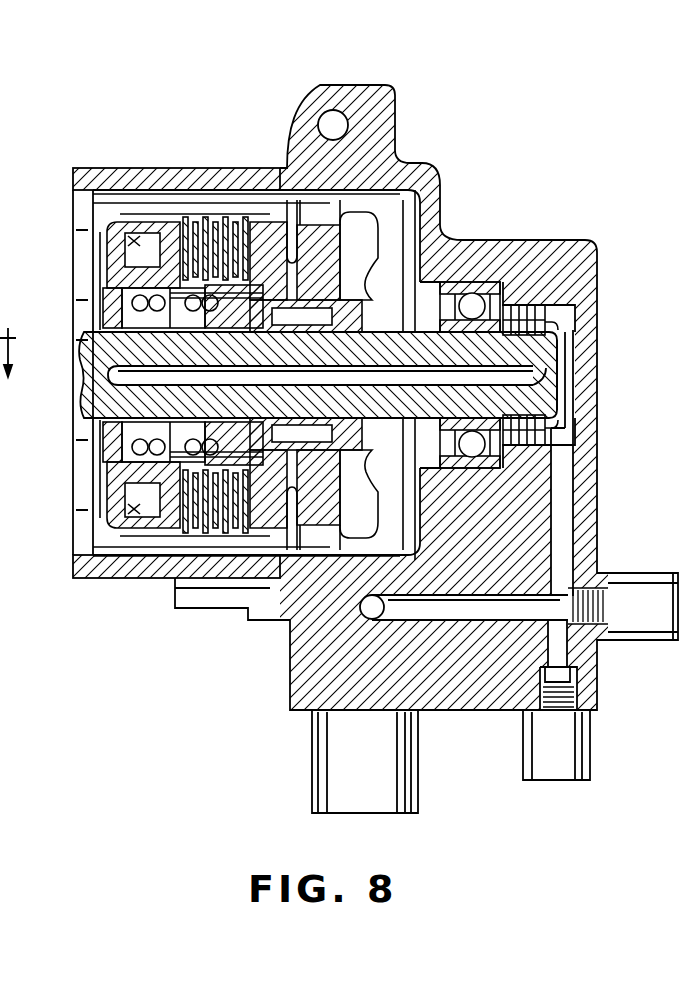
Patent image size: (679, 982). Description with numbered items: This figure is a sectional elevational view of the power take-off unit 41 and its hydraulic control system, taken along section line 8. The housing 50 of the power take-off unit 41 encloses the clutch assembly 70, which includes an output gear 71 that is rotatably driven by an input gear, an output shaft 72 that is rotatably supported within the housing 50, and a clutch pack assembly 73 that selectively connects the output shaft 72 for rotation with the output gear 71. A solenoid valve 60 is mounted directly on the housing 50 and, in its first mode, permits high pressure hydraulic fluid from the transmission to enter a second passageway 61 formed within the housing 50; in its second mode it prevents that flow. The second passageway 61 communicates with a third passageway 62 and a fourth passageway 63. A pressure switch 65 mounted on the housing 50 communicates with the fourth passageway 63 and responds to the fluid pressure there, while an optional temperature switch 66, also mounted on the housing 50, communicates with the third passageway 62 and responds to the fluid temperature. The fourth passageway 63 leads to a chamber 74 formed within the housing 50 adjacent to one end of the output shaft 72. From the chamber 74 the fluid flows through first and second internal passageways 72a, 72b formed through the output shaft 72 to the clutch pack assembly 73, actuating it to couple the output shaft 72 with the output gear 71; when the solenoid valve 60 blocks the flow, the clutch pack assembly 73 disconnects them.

The power take-off unit 41 is at (502, 168).
The housing 50 is at (571, 250).
The clutch pack assembly 73 is at (196, 204).
The output gear 71 is at (310, 237).
The clutch assembly 70 is at (362, 277).
The output shaft 72 is at (553, 324).
The first internal passageway 72a is at (532, 384).
The second internal passageway 72b is at (130, 394).
The chamber 74 is at (570, 398).
The fourth passageway 63 is at (552, 478).
The second passageway 61 is at (360, 612).
The third passageway 62 is at (472, 610).
The solenoid valve 60 is at (325, 768).
The pressure switch 65 is at (554, 782).
The temperature switch 66 is at (655, 632).
The section line 8 is at (16, 344).